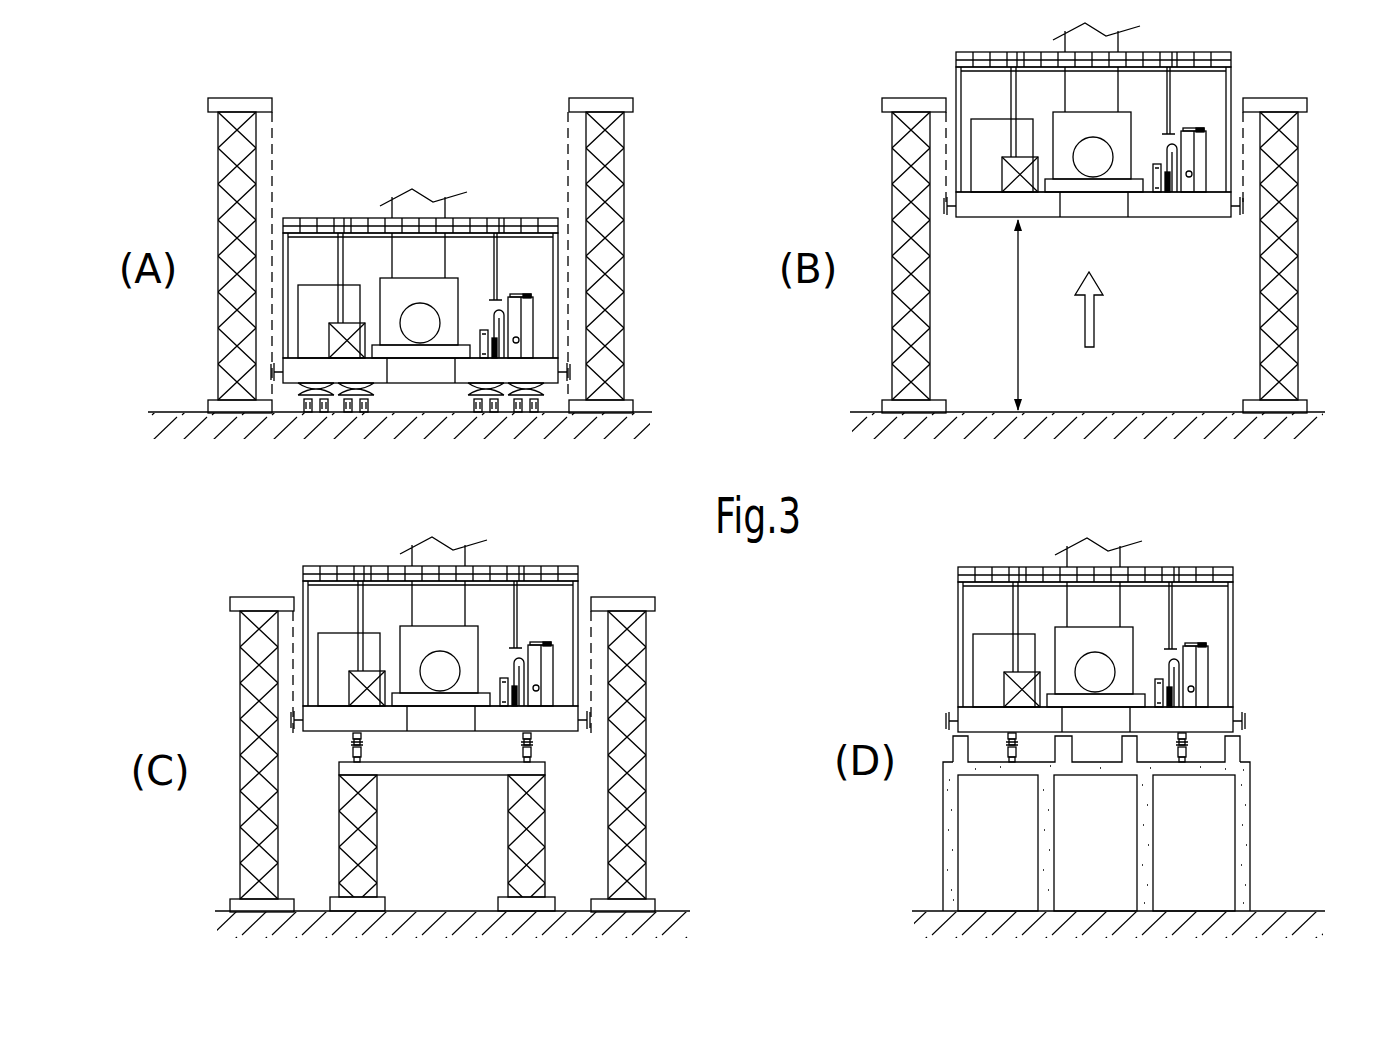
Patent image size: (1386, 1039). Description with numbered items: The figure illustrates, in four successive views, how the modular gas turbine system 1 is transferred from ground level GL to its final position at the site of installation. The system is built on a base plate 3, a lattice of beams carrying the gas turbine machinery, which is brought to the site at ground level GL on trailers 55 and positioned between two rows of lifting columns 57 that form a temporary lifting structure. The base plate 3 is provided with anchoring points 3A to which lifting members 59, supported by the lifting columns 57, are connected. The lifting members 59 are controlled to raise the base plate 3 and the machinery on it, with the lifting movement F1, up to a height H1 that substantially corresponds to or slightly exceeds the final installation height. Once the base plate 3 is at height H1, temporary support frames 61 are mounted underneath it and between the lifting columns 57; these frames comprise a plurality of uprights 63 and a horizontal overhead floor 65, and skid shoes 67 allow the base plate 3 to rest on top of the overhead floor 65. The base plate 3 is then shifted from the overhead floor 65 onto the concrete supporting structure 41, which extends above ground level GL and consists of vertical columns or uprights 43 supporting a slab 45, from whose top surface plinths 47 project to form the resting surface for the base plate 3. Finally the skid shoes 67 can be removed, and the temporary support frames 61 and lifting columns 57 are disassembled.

The modular gas turbine system 1 is at (357, 202).
The base plate 3 is at (425, 372).
The anchoring points 3A is at (276, 362).
The supporting structure 41 is at (1260, 842).
The vertical columns or uprights 43 is at (948, 862).
The slab 45 is at (1113, 765).
The plinths 47 is at (1237, 746).
The trailers 55 is at (350, 414).
The lifting columns 57 is at (206, 178).
The lifting members 59 is at (274, 156).
The temporary support frames 61 is at (556, 855).
The uprights 63 is at (508, 862).
The horizontal overhead floor 65 is at (452, 770).
The skid shoes 67 is at (352, 745).
The ground level GL is at (148, 412).
The lifting height H1 is at (1027, 315).
The lifting movement F1 is at (1093, 320).